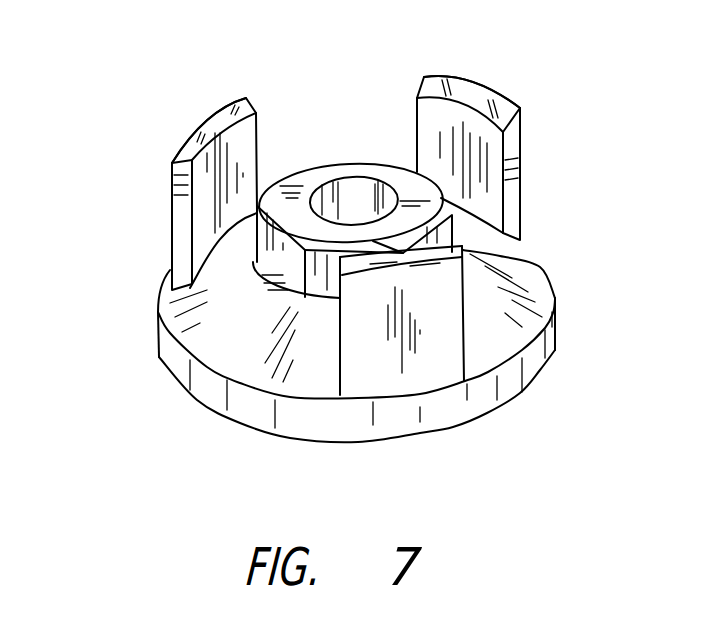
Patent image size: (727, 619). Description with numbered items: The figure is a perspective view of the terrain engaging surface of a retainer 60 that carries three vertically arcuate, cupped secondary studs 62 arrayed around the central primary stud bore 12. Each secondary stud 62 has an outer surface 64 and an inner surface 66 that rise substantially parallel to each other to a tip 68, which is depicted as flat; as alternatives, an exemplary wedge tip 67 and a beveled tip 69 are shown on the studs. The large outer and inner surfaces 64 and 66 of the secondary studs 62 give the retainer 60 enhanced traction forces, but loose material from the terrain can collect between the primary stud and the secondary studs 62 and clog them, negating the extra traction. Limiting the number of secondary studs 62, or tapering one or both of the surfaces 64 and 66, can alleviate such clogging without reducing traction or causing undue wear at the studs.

The bolt hole 12 is at (363, 177).
The retainer 60 is at (556, 300).
The secondary studs 62 is at (168, 225).
The outer surface 64 is at (168, 187).
The inner surface 66 is at (205, 233).
The wedge tip 67 is at (203, 117).
The tip 68 is at (465, 250).
The bevel tip 69 is at (519, 108).